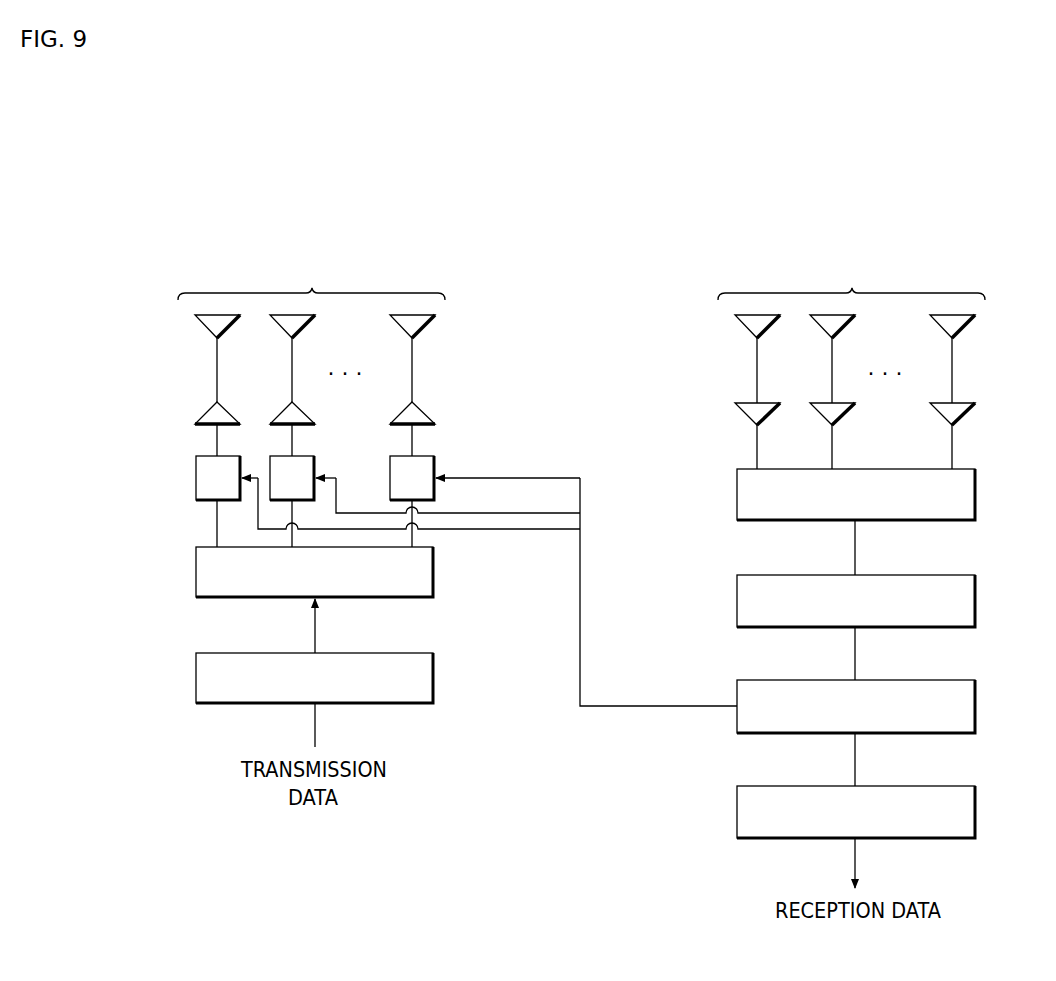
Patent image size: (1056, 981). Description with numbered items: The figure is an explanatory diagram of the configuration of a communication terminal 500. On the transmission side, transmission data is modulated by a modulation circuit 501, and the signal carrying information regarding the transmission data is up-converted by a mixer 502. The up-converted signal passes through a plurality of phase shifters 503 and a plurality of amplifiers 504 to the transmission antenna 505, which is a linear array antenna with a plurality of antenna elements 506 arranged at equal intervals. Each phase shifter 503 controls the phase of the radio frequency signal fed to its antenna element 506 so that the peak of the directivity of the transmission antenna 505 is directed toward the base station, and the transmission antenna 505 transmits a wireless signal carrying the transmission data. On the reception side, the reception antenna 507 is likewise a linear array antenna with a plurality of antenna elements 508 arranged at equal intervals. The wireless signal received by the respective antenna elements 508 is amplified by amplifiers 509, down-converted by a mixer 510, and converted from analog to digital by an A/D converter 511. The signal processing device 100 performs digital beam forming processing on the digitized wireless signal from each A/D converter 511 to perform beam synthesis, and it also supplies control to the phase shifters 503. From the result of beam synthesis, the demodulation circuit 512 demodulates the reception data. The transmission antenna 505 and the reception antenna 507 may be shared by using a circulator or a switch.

The communication terminal 500 is at (988, 226).
The modulation circuit 501 is at (196, 677).
The mixer 502 is at (196, 571).
The phase shifter 503 is at (196, 476).
The amplifier 504 is at (205, 417).
The transmission antenna 505 is at (311, 281).
The antenna element 506 is at (205, 330).
The reception antenna 507 is at (851, 281).
The antenna element 508 is at (745, 330).
The amplifier 509 is at (745, 418).
The mixer 510 is at (737, 494).
The A/D converter 511 is at (737, 599).
The demodulation circuit 512 is at (737, 813).
The signal processing device 100 is at (975, 705).